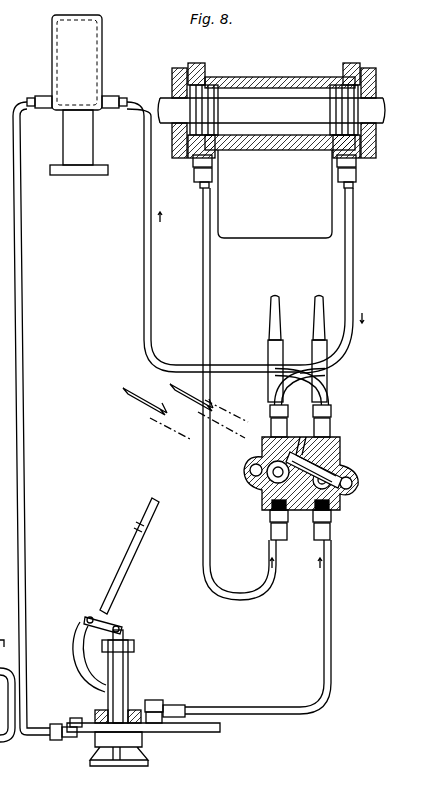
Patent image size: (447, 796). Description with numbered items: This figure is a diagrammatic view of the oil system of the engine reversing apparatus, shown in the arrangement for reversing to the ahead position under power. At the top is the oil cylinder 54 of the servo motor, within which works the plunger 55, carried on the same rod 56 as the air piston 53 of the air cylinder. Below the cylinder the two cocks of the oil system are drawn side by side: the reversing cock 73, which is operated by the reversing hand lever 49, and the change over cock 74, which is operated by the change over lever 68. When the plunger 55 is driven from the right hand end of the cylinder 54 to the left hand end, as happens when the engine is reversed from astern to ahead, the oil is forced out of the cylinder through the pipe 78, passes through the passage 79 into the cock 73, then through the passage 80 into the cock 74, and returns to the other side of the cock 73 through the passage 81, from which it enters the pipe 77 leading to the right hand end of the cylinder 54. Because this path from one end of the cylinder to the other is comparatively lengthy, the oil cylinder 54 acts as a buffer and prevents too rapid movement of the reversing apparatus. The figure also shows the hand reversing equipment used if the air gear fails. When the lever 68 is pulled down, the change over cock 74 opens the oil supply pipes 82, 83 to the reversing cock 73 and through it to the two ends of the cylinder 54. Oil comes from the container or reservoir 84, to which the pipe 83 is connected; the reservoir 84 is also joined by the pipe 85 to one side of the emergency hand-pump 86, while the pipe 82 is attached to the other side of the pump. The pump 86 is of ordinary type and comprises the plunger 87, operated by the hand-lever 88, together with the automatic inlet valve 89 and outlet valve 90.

The reversing hand lever 49 is at (277, 340).
The piston 53 is at (318, 340).
The oil cylinder 54 is at (262, 77).
The plunger 55 is at (193, 155).
The rod 56 is at (271, 110).
The change over lever 68 is at (197, 413).
The reversing cock 73 is at (256, 474).
The change over cock 74 is at (338, 470).
The pipe 77 is at (354, 272).
The pipe 78 is at (203, 248).
The passage 79 is at (270, 503).
The passage 80 is at (299, 455).
The passage 81 is at (334, 505).
The oil supply pipe 82 is at (324, 607).
The oil supply pipe 83 is at (144, 133).
The oil container 84 is at (55, 45).
The pipe 85 is at (22, 300).
The emergency hand-pump 86 is at (128, 672).
The plunger 87 is at (96, 673).
The hand-lever 88 is at (138, 545).
The automatic inlet valve 89 is at (70, 722).
The automatic outlet valve 90 is at (160, 724).